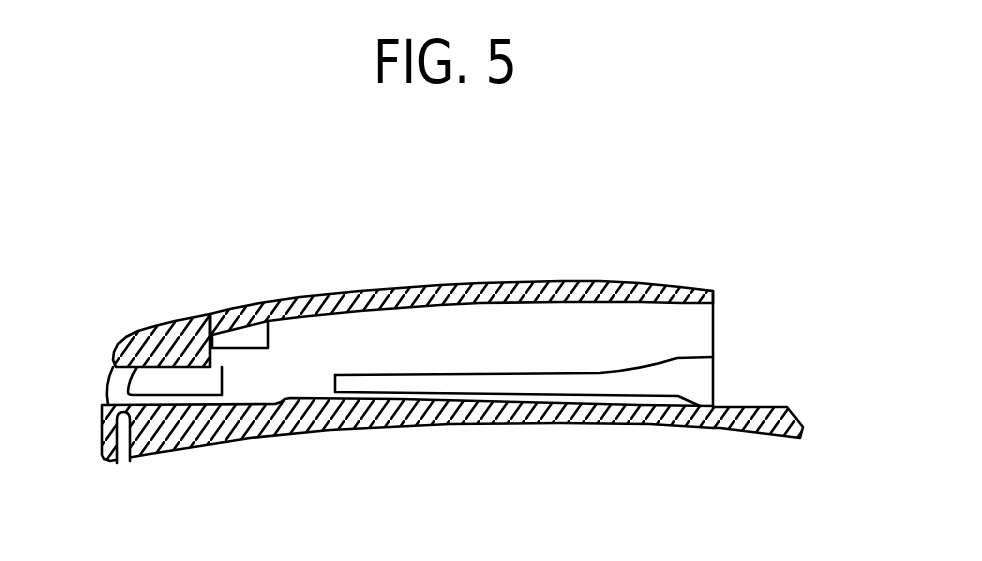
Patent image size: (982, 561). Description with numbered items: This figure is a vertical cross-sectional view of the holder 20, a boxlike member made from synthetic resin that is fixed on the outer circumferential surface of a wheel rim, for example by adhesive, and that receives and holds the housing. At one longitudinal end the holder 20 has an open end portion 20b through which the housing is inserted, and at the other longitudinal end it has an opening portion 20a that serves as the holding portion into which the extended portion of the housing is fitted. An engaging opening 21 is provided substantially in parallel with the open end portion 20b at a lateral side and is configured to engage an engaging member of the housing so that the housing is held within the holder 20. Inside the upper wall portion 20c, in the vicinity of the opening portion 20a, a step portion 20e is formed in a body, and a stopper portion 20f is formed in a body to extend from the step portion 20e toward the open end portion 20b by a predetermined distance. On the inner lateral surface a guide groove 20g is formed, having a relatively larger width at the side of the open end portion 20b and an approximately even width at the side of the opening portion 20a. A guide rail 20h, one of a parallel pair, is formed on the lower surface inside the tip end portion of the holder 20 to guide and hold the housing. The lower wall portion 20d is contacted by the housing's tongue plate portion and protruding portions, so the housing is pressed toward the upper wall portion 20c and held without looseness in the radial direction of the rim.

The holder 20 is at (405, 274).
The opening portion 20a is at (177, 382).
The open end portion 20b is at (688, 303).
The upper wall portion 20c is at (490, 288).
The lower wall portion 20d is at (753, 403).
The step portion 20e is at (216, 366).
The stopper portion 20f is at (250, 340).
The guide groove 20g is at (510, 383).
The guide rail 20h is at (170, 403).
The engaging opening 21 is at (250, 373).